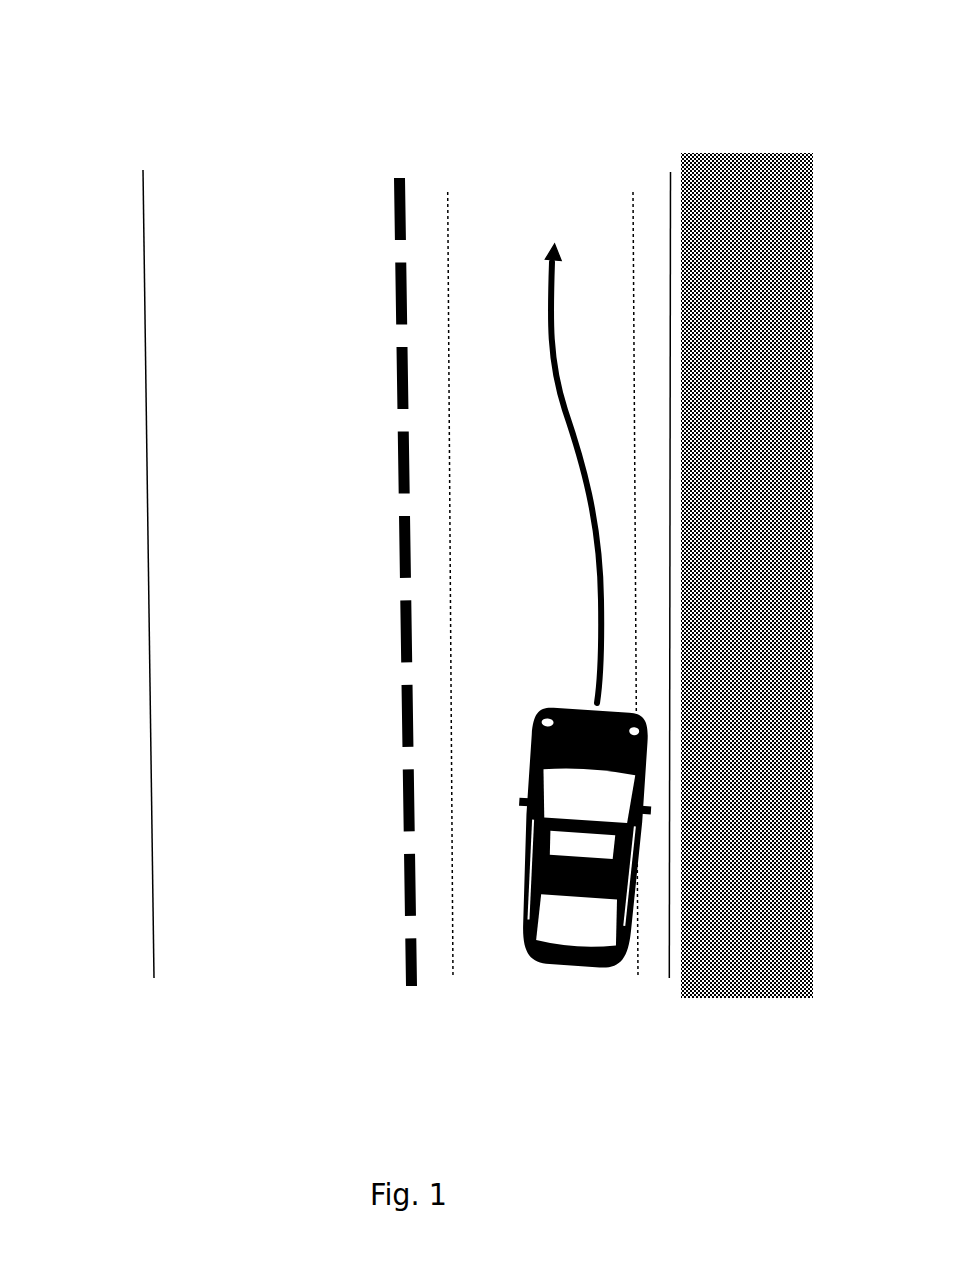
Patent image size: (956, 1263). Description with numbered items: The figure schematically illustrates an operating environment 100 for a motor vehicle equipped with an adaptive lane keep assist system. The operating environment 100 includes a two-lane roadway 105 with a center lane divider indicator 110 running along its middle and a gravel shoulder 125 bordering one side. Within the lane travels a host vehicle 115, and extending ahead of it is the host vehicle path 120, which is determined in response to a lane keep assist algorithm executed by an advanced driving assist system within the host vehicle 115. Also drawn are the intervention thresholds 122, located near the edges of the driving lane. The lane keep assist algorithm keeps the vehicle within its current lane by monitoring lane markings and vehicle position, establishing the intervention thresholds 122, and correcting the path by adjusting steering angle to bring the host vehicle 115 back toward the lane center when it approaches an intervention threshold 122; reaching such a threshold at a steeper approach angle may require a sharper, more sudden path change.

The operating environment 100 is at (430, 36).
The two-lane roadway 105 is at (140, 802).
The center lane divider indicator 110 is at (415, 181).
The host vehicle 115 is at (505, 946).
The host vehicle path 120 is at (556, 219).
The intervention thresholds 122 is at (618, 458).
The gravel shoulder 125 is at (766, 139).